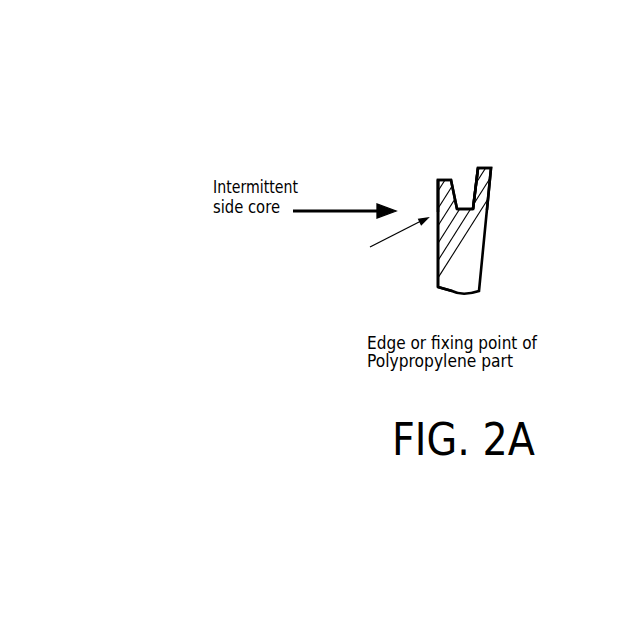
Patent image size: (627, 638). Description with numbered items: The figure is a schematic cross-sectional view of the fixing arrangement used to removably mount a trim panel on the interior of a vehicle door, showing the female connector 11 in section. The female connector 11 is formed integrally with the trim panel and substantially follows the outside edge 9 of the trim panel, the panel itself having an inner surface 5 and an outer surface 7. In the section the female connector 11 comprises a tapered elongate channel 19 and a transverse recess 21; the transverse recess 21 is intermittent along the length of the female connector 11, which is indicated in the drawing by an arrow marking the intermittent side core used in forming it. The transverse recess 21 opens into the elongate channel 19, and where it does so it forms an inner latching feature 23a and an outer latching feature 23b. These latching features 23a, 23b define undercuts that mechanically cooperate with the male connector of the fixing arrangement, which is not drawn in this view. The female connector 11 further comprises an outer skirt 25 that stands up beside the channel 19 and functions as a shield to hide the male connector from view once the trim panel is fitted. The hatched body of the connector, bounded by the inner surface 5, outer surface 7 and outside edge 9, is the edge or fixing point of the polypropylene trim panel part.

The inner surface 5 is at (478, 287).
The outer surface 7 is at (438, 282).
The outside edge 9 is at (466, 250).
The female connector 11 is at (387, 242).
The tapered elongate channel 19 is at (465, 183).
The transverse recess 21 is at (438, 212).
The inner latching feature 23a is at (445, 203).
The outer latching feature 23b is at (478, 203).
The outer skirt 25 is at (483, 178).